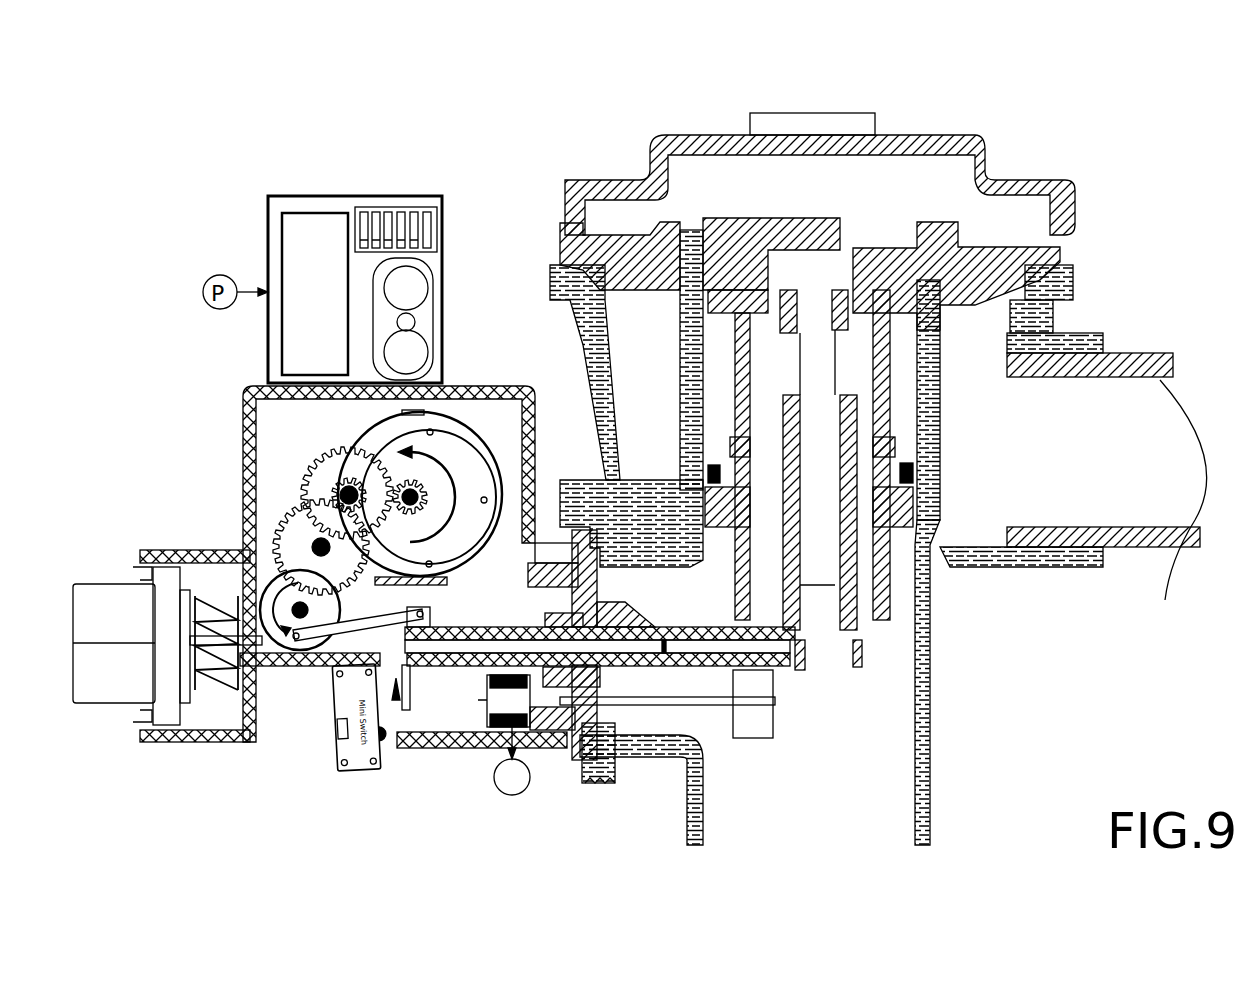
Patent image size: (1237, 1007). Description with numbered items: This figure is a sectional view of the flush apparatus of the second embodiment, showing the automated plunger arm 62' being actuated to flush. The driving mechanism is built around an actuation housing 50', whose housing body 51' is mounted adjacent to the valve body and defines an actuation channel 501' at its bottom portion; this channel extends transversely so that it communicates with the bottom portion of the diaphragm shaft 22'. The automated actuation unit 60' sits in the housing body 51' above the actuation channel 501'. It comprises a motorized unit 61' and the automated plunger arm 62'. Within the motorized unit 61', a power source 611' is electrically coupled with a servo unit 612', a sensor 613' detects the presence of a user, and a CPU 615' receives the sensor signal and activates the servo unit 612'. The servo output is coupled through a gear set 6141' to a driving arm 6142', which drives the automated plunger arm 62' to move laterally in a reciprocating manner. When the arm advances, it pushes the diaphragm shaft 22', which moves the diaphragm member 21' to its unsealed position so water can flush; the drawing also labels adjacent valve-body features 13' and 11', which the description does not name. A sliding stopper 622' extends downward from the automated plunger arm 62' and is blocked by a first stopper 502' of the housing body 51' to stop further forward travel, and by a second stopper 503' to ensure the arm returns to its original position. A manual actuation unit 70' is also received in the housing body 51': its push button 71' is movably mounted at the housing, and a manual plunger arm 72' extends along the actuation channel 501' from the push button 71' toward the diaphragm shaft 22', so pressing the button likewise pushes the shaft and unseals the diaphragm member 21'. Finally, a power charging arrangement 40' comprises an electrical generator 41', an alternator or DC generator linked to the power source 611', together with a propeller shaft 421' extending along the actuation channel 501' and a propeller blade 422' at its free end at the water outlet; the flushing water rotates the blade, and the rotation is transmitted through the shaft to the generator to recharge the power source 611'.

The automated actuation unit 60' is at (370, 234).
The power source 611' is at (279, 251).
The motorized unit 61' is at (432, 233).
The CPU 615' is at (386, 184).
The sensor 613' is at (451, 276).
The servo unit 612' is at (443, 429).
The actuation housing 50' is at (331, 533).
The housing body 51' is at (368, 543).
The gear set 6141' is at (300, 706).
The driving arm 6142' is at (290, 705).
The manual actuation unit 70' is at (166, 541).
The push button 71' is at (114, 590).
The actuation channel 501' is at (186, 596).
The power charging arrangement 40' is at (605, 761).
The second stopper 503' is at (451, 786).
The sliding stopper 622' is at (401, 780).
The electrical generator 41' is at (520, 749).
The first stopper 502' is at (572, 690).
The automated plunger arm 62' is at (650, 757).
The manual plunger arm 72' is at (641, 752).
The propeller shaft 421' is at (695, 772).
The propeller blade 422' is at (803, 740).
The diaphragm member 21' is at (841, 460).
The valve seat 13' is at (1010, 234).
The diaphragm shaft 22' is at (860, 500).
The pipe 11' is at (1073, 432).